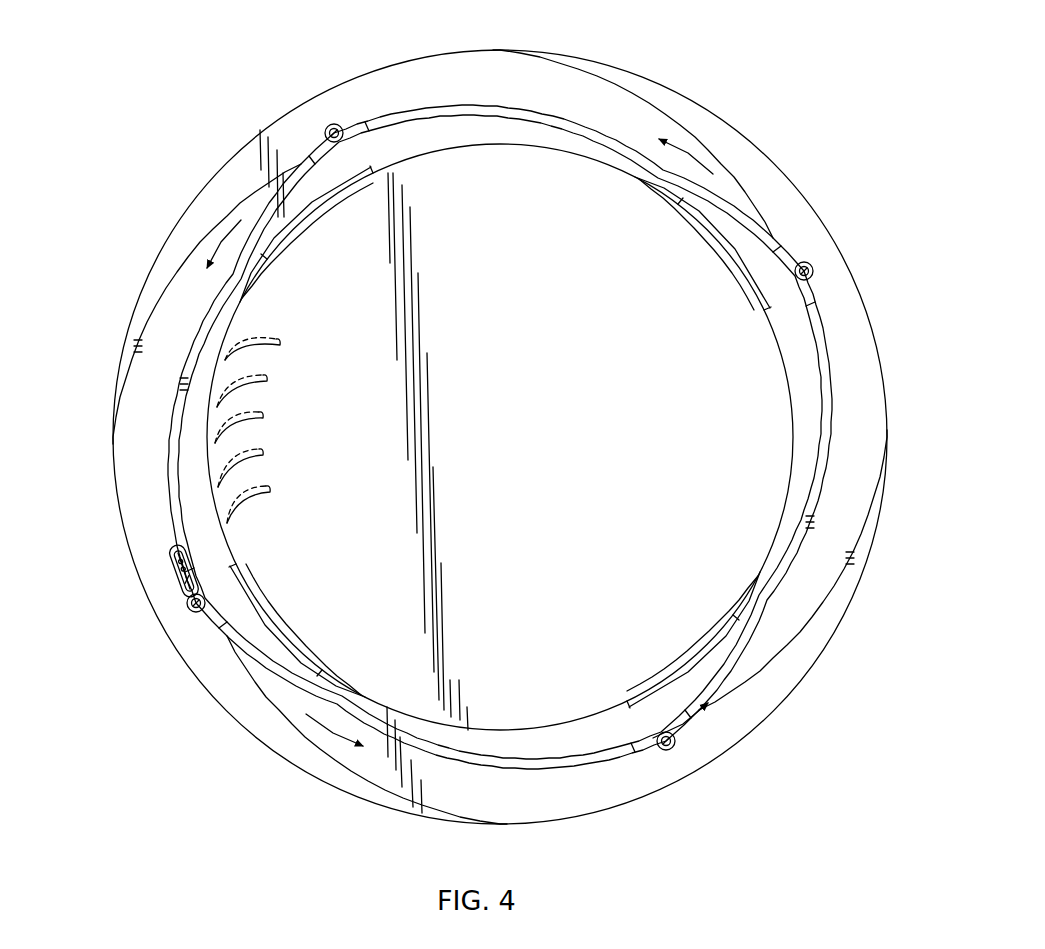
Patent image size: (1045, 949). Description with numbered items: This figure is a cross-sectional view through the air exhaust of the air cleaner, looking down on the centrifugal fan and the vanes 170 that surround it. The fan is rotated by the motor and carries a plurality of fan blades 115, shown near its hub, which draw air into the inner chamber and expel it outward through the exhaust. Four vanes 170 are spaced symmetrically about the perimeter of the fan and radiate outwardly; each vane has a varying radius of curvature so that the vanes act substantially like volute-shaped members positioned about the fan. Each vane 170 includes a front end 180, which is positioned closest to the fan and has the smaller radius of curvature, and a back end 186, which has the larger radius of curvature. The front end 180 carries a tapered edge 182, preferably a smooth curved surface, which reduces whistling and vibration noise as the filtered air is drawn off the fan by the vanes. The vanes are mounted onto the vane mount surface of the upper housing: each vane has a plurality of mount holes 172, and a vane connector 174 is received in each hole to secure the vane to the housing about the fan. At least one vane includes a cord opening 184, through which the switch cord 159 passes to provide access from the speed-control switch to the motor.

The fan blades 115 is at (265, 385).
The switch cord 159 is at (174, 560).
The vanes 170 is at (190, 232).
The mount holes 172 is at (337, 123).
The vane connector 174 is at (328, 127).
The front end 180 is at (300, 208).
The tapered edge 182 is at (362, 188).
The cord opening 184 is at (184, 592).
The back end 186 is at (496, 52).